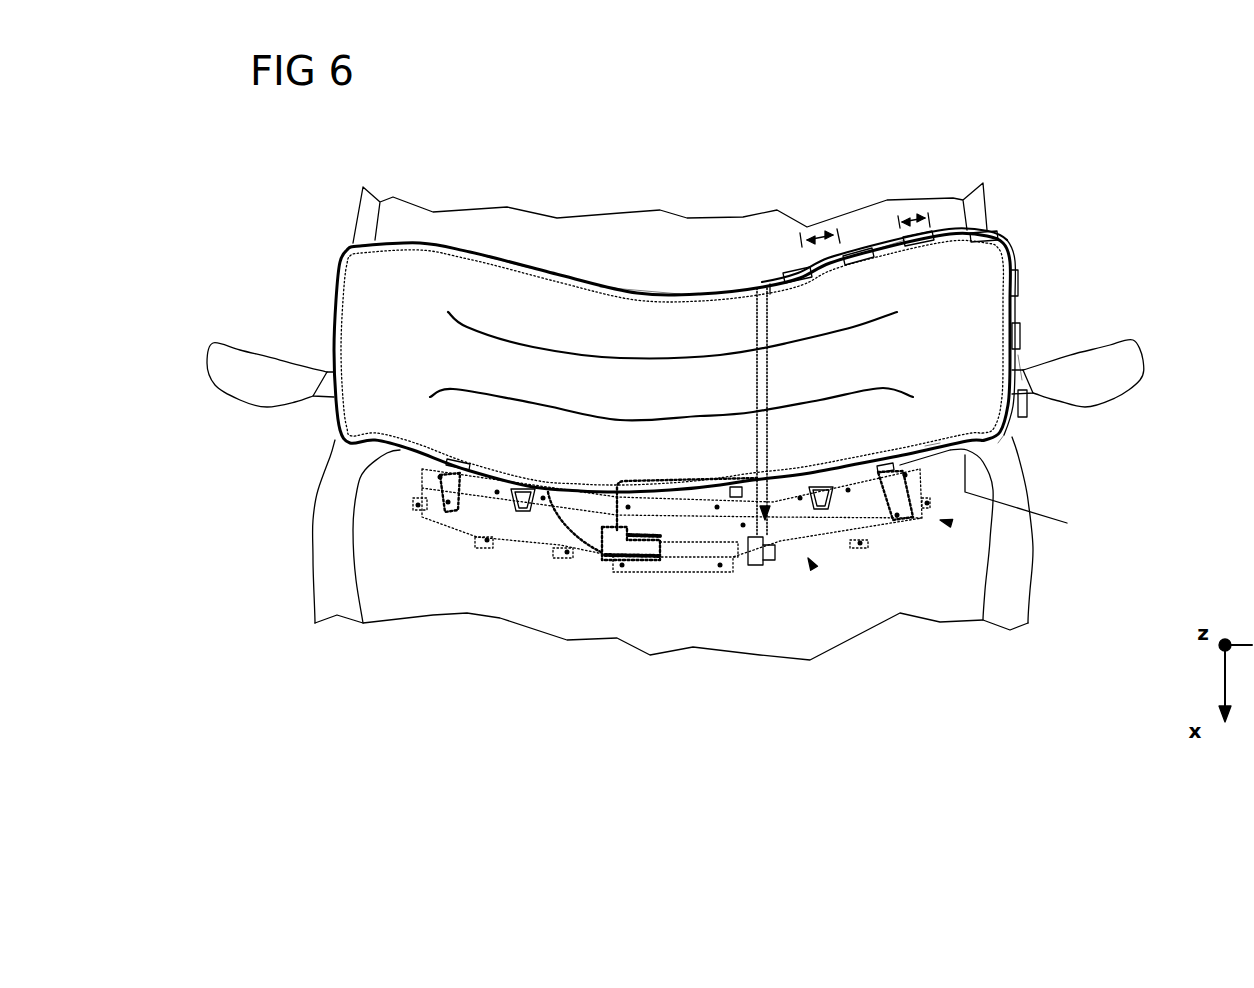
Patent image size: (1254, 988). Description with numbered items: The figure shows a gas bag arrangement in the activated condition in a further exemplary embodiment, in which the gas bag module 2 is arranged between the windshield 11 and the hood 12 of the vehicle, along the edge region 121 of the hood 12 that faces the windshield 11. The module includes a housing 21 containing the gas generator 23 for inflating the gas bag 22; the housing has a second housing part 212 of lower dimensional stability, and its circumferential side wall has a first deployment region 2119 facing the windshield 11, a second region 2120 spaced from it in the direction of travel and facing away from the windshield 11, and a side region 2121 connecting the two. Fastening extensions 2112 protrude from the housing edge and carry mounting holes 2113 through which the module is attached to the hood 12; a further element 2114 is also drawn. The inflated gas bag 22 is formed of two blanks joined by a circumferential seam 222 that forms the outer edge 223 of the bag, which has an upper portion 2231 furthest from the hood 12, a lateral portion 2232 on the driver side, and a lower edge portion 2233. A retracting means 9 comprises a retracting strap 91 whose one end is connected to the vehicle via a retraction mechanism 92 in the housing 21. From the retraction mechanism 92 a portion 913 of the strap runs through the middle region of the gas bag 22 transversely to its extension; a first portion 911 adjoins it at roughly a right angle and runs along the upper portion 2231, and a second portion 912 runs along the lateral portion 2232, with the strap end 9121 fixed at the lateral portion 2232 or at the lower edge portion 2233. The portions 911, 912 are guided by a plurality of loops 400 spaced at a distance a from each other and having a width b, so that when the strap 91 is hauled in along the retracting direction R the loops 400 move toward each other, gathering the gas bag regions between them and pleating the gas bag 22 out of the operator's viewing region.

The gas bag module 2 is at (940, 520).
The retracting means 9 is at (808, 558).
The windshield 11 is at (388, 225).
The hood 12 is at (940, 600).
The housing 21 is at (463, 518).
The gas bag 22 is at (982, 415).
The gas generator 23 is at (690, 543).
The retracting strap 91 is at (767, 383).
The retraction mechanism 92 is at (760, 567).
The edge region of the hood 121 is at (932, 457).
The second housing part 212 is at (440, 512).
The circumferential seam 222 is at (637, 298).
The outer edge of the gas bag 223 is at (503, 268).
The loops 400 is at (792, 270).
The first portion of the retracting strap 911 is at (825, 263).
The second portion of the retracting strap 912 is at (1015, 312).
The middle portion of the retracting strap 913 is at (757, 365).
The fastening extensions 2112 is at (480, 547).
The mounting holes 2113 is at (483, 543).
The hook portion 2114 is at (513, 493).
The first region of the side wall 2119 is at (680, 512).
The second region of the side wall 2120 is at (740, 567).
The side region of the side wall 2121 is at (418, 500).
The upper portion of the gas bag edge 2231 is at (893, 240).
The lateral portion of the gas bag edge 2232 is at (1023, 367).
The lower edge portion of the gas bag 2233 is at (1045, 495).
The end of the retracting strap 9121 is at (1015, 437).
The distance between loops a is at (818, 238).
The width of the loops b is at (917, 210).
The retracting direction R is at (765, 506).